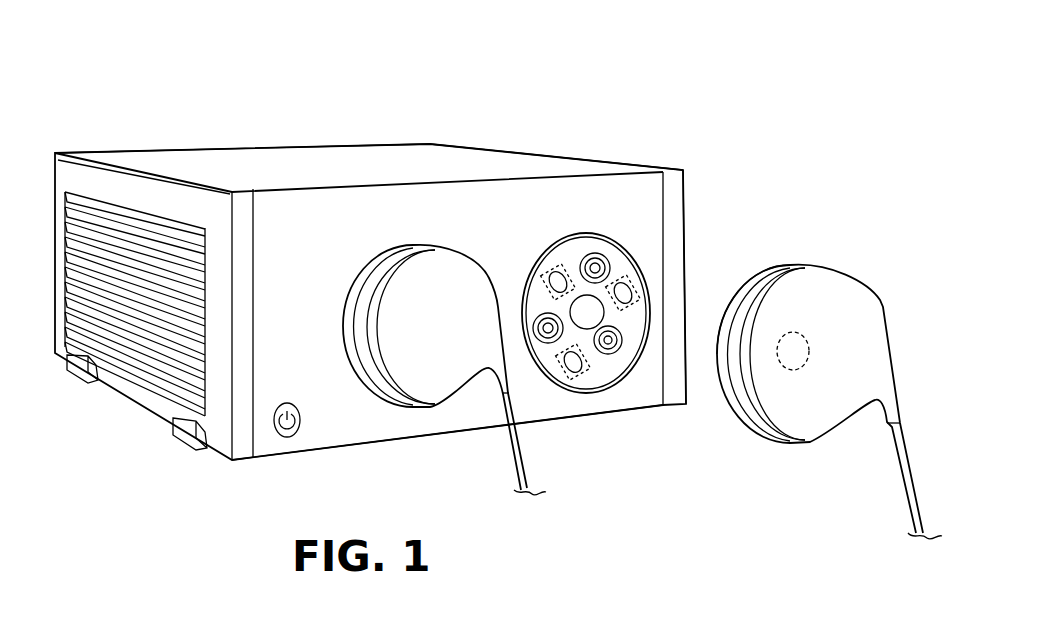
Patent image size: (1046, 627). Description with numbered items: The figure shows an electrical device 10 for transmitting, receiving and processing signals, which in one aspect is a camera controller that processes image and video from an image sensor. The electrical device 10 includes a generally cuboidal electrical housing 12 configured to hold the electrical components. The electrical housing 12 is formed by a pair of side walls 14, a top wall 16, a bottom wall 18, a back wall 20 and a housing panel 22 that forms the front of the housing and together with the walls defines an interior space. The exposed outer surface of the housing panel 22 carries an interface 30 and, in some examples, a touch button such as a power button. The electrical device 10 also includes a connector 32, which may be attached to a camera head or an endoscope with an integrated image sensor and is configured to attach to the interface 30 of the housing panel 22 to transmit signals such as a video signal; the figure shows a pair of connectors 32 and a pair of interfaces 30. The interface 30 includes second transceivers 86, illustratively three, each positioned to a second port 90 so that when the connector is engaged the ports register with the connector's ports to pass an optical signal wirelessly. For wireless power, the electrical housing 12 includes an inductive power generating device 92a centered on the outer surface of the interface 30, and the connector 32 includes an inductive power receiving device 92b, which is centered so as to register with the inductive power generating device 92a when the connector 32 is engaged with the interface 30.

The electrical device 10 is at (532, 108).
The electrical housing 12 is at (746, 234).
The side walls 14 is at (167, 343).
The top wall 16 is at (363, 163).
The bottom wall 18 is at (293, 422).
The back wall 20 is at (150, 155).
The housing panel 22 is at (597, 190).
The interface 30 is at (629, 410).
The connector 32 is at (449, 339).
The second transceiver 86 is at (548, 276).
The second port 90 is at (579, 262).
The inductive power generating device 92a is at (596, 317).
The inductive power receiving device 92b is at (797, 333).